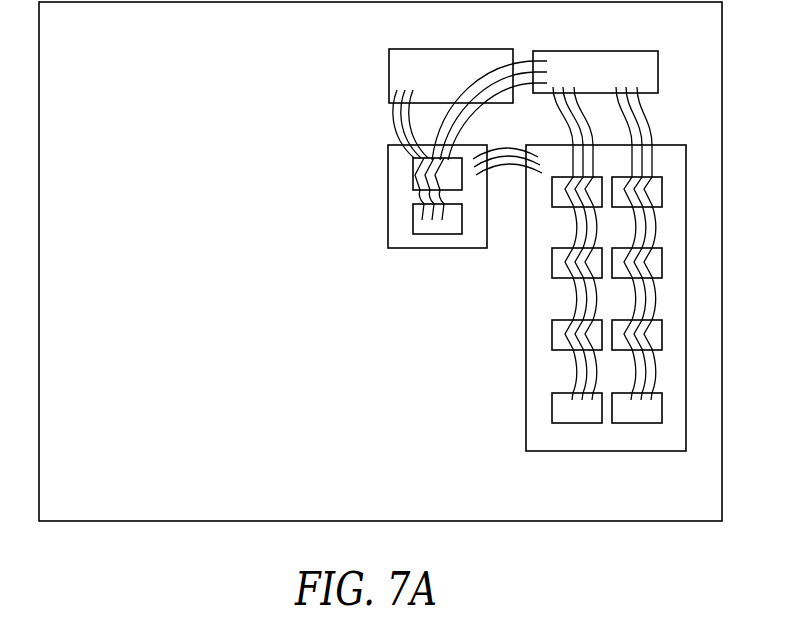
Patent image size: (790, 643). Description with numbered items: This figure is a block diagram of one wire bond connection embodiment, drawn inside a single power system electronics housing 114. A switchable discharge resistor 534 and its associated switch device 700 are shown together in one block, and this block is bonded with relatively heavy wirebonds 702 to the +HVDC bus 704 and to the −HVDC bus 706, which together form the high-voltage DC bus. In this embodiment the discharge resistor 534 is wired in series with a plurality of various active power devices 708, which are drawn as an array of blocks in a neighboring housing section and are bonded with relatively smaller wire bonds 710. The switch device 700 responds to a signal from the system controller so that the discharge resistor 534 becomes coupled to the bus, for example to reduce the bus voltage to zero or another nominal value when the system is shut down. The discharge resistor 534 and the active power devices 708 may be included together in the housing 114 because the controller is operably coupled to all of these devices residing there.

The power system electronics housing 114 is at (627, 511).
The switchable discharge resistor 534 is at (408, 170).
The switch device 700 is at (408, 212).
The wirebonds 702 is at (389, 112).
The +HVDC bus 704 is at (400, 60).
The −HVDC bus 706 is at (622, 58).
The active power devices 708 is at (546, 269).
The wire bonds 710 is at (558, 296).